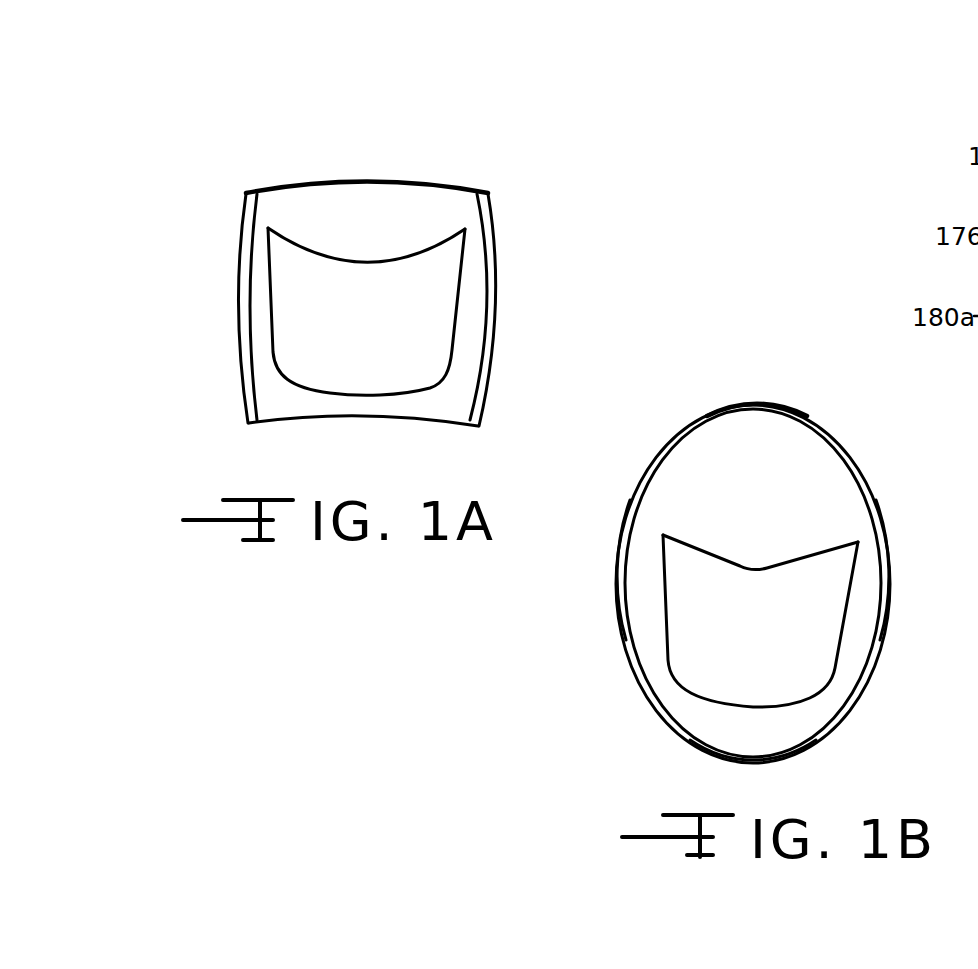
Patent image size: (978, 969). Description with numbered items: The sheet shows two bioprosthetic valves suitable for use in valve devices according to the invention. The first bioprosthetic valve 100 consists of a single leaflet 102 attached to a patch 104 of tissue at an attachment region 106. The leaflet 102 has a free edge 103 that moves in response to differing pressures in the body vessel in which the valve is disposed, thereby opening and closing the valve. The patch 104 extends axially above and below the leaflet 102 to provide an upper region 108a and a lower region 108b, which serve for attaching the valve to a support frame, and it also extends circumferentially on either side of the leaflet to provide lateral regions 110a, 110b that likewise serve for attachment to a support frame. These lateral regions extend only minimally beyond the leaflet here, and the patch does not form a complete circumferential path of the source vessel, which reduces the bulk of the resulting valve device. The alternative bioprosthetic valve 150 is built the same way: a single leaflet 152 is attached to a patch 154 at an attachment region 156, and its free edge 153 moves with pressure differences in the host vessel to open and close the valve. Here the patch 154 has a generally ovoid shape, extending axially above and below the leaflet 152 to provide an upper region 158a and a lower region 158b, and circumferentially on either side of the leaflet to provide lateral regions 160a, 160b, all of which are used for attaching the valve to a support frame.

In FIG. 1A, the bioprosthetic valve 100 is at (406, 142).
In FIG. 1A, the leaflet 102 is at (388, 338).
In FIG. 1A, the free edge 103 is at (353, 262).
In FIG. 1A, the patch 104 is at (377, 205).
In FIG. 1A, the attachment region 106 is at (260, 248).
In FIG. 1A, the upper region 108a is at (433, 200).
In FIG. 1A, the lower region 108b is at (377, 403).
In FIG. 1A, the lateral region 110a is at (253, 325).
In FIG. 1A, the lateral region 110b is at (463, 357).
In FIG. 1B, the bioprosthetic valve 150 is at (787, 390).
In FIG. 1B, the leaflet 152 is at (777, 643).
In FIG. 1B, the free edge 153 is at (740, 567).
In FIG. 1B, the patch 154 is at (768, 458).
In FIG. 1B, the attachment region 156 is at (647, 555).
In FIG. 1B, the upper region 158a is at (825, 507).
In FIG. 1B, the lower region 158b is at (777, 725).
In FIG. 1B, the lateral region 160a is at (647, 633).
In FIG. 1B, the lateral region 160b is at (855, 663).